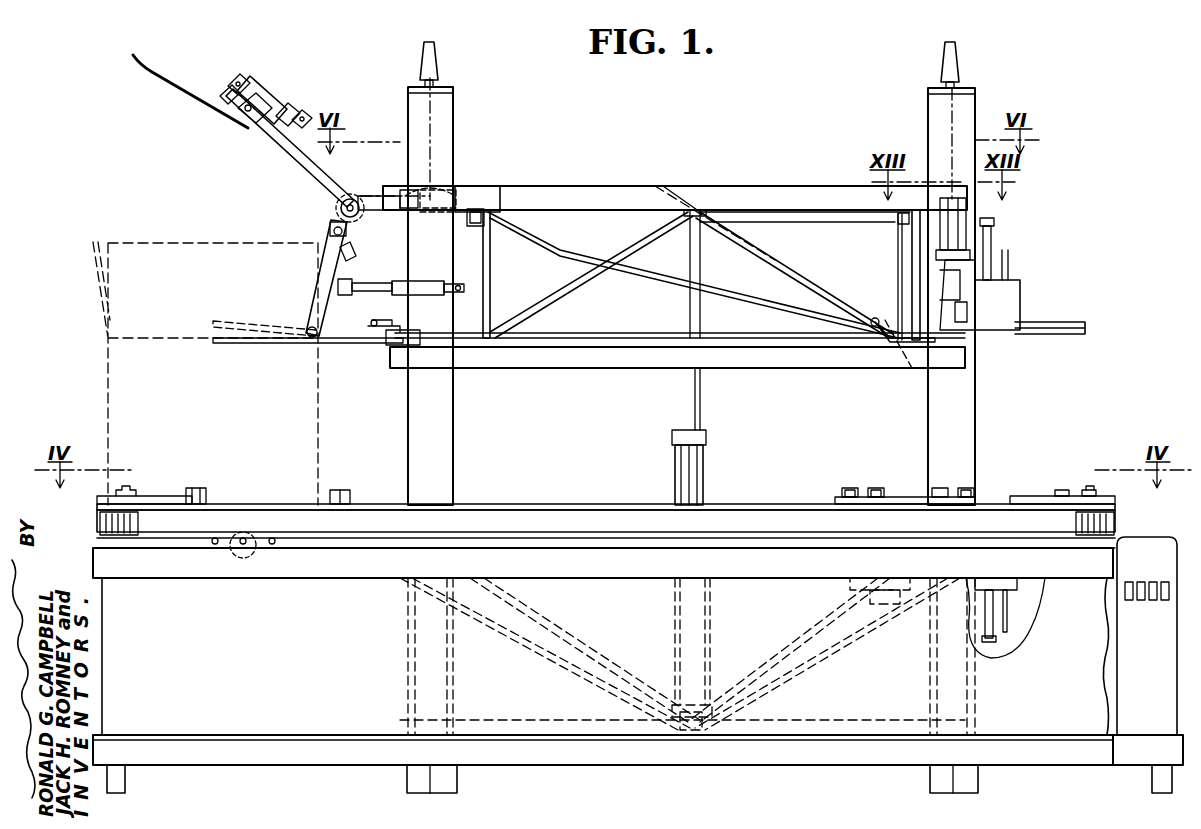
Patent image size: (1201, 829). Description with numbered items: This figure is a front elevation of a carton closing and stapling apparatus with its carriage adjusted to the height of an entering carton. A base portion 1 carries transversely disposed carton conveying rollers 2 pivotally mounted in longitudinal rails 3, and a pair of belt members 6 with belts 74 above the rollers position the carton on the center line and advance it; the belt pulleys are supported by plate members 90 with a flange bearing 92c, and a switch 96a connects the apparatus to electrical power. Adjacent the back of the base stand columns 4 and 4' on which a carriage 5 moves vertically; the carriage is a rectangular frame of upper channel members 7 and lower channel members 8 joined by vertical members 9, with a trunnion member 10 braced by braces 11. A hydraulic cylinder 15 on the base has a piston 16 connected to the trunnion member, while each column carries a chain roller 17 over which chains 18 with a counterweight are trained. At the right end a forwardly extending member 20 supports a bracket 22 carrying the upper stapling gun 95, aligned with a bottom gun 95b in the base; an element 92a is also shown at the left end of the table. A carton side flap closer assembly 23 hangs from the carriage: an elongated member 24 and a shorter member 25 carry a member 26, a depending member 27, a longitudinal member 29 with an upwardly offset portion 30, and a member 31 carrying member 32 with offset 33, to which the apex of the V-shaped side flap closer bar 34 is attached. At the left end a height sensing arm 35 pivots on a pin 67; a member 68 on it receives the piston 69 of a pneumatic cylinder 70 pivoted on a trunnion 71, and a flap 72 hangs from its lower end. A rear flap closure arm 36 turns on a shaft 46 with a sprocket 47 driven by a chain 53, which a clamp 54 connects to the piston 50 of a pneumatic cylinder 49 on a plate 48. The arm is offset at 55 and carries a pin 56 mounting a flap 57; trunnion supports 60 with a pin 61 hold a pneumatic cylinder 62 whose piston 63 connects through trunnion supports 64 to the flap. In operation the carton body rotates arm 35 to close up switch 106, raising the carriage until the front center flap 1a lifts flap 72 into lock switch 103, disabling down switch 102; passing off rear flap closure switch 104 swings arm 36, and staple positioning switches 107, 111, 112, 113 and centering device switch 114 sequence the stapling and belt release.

The base portion 1 is at (266, 642).
The front center flap 1a is at (230, 322).
The carton conveying rollers 2 is at (250, 556).
The rails 3 is at (350, 544).
The column 4 is at (450, 289).
The column 4' is at (928, 287).
The carriage 5 is at (597, 382).
The belt members 6 is at (572, 490).
The upper channel members 7 is at (585, 188).
The lower channel members 8 is at (657, 368).
The vertical members 9 is at (912, 260).
The trunnion member 10 is at (668, 184).
The braces 11 is at (570, 282).
The hydraulic cylinder 15 is at (706, 470).
The piston 16 is at (702, 398).
The chain roller 17 is at (436, 60).
The chains 18 is at (434, 135).
The forwardly extending member 20 is at (968, 222).
The bracket 22 is at (994, 246).
The carton side flap closer assembly 23 is at (748, 175).
The elongated member 24 is at (482, 224).
The shorter member 25 is at (902, 226).
The member 26 is at (782, 215).
The member 27 is at (484, 266).
The member 29 is at (622, 333).
The offset portion 30 is at (420, 326).
The member 31 is at (898, 283).
The member 32 is at (897, 356).
The offset portion 33 is at (874, 318).
The carton side flap closer bar 34 is at (644, 277).
The height sensing arm 35 is at (322, 236).
The carton rear flap closure arm 36 is at (272, 140).
The shaft 46 is at (338, 200).
The sprocket 47 is at (405, 190).
The plate 48 is at (505, 198).
The pneumatic cylinder 49 is at (482, 186).
The piston 50 is at (448, 190).
The chain 53 is at (367, 196).
The clamp 54 is at (412, 182).
The offset 55 is at (250, 122).
The pin 56 is at (240, 112).
The flap 57 is at (156, 78).
The trunnion supports 60 is at (290, 112).
The pin 61 is at (305, 112).
The pneumatic cylinder 62 is at (268, 94).
The piston 63 is at (246, 82).
The trunnion supports 64 is at (224, 94).
The pin 67 is at (334, 230).
The member 68 is at (346, 292).
The piston 69 is at (372, 278).
The pneumatic cylinder 70 is at (430, 282).
The trunnion 71 is at (466, 288).
The flap 72 is at (344, 344).
The belts 74 is at (766, 531).
The plate members 90 is at (162, 506).
The bolt 92a is at (124, 484).
The flange bearing 92c is at (136, 498).
The stapling gun 95 is at (1005, 296).
The bottom gun 95b is at (1010, 585).
The switch 96a is at (1165, 600).
The down switch 102 is at (345, 490).
The lock switch 103 is at (396, 346).
The rear flap closure switch 104 is at (198, 488).
The up switch 106 is at (352, 250).
The staple positioning switch 107 is at (940, 488).
The staple positioning switch 111 is at (968, 488).
The staple positioning switch 112 is at (848, 488).
The staple positioning switch 113 is at (876, 488).
The centering device switch 114 is at (1062, 490).